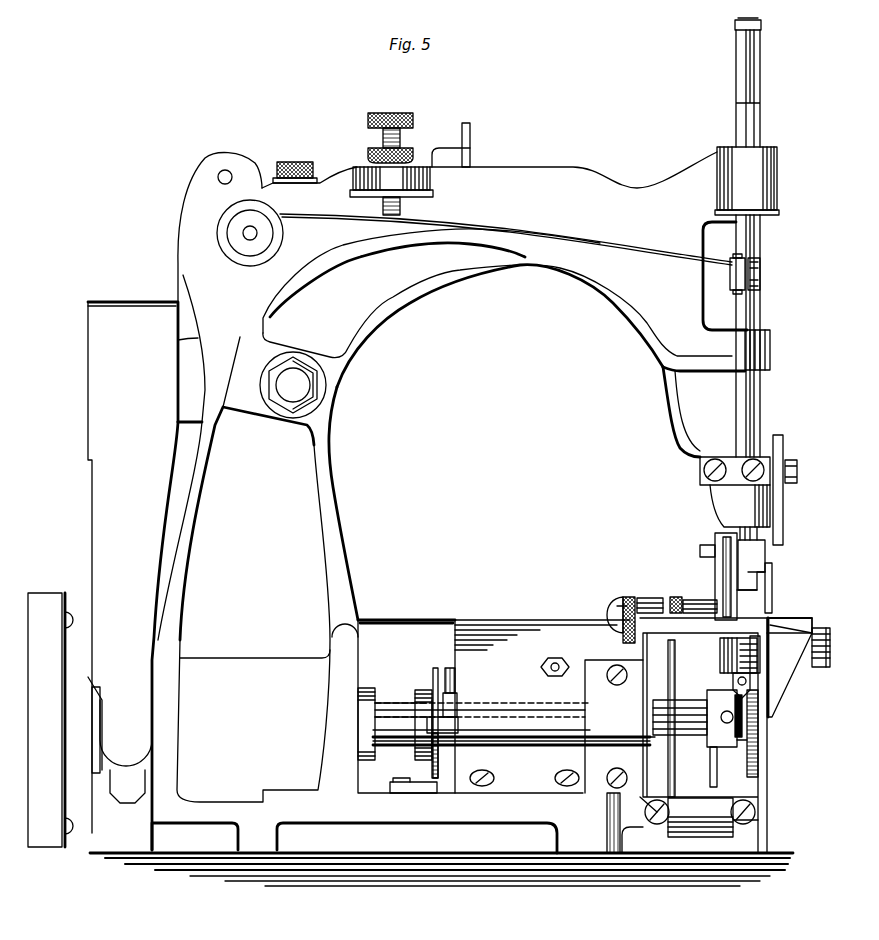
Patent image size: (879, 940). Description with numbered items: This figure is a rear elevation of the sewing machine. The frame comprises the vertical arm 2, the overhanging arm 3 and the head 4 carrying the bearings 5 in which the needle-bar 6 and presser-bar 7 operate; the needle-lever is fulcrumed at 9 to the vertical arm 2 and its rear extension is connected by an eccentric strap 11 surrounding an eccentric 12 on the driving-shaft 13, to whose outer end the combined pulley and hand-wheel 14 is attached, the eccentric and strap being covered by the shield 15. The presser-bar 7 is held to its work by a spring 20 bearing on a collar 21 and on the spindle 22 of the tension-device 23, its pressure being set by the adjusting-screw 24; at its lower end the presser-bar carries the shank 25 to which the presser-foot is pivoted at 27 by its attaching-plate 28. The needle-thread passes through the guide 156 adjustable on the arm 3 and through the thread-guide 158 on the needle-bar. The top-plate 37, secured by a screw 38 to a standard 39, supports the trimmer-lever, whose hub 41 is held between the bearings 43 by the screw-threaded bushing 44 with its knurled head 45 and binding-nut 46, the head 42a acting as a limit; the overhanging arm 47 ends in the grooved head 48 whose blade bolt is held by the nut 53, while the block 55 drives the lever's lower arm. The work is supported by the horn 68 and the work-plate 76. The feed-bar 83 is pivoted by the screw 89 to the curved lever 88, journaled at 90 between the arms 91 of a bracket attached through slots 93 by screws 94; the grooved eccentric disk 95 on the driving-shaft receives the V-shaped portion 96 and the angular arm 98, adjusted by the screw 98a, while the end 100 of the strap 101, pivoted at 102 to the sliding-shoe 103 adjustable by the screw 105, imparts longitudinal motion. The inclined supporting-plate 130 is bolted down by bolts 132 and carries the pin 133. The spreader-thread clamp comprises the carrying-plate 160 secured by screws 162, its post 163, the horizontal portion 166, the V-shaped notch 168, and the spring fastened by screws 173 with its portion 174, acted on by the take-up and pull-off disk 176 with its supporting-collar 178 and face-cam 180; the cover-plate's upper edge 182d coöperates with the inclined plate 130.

The vertical arm 2 is at (350, 590).
The overhanging arm 3 is at (617, 296).
The head 4 is at (685, 422).
The bearings 5 is at (733, 190).
The needle-bar 6 is at (757, 78).
The presser-bar 7 is at (757, 423).
The fulcrum 9 is at (293, 385).
The eccentric strap 11 is at (130, 790).
The eccentric 12 is at (108, 760).
The driving-shaft 13 is at (504, 706).
The combined pulley and hand-wheel 14 is at (43, 605).
The shield 15 is at (133, 567).
The spring 20 is at (638, 242).
The collar 21 is at (763, 274).
The spindle 22 is at (258, 233).
The tension-device 23 is at (248, 259).
The adjusting-screw 24 is at (415, 128).
The shank 25 is at (763, 556).
The pivotal connection 27 is at (771, 537).
The attaching-plate 28 is at (771, 584).
The top-plate 37 is at (705, 743).
The screw 38 is at (630, 650).
The standard 39 is at (661, 718).
The hub 41 is at (700, 610).
The head 42a is at (620, 606).
The bearings 43 is at (647, 597).
The screw-threaded bushing 44 is at (658, 594).
The knurled head 45 is at (675, 597).
The binding-nut 46 is at (613, 610).
The overhanging arm 47 is at (703, 571).
The grooved head 48 is at (718, 535).
The nut 53 is at (706, 546).
The block 55 is at (713, 788).
The horn 68 is at (815, 667).
The work-plate 76 is at (800, 619).
The feed-bar 83 is at (747, 652).
The curved lever 88 is at (727, 776).
The screw 89 is at (759, 643).
The journal 90 is at (620, 837).
The arms 91 is at (676, 812).
The slots 93 is at (743, 798).
The screws 94 is at (607, 810).
The grooved eccentric disk 95 is at (758, 715).
The V-shaped portion 96 is at (790, 680).
The angular arm 98 is at (747, 743).
The screw 98a is at (748, 687).
The strap end 100 is at (658, 743).
The strap 101 is at (658, 762).
The pivotal connection 102 is at (680, 717).
The sliding-shoe 103 is at (742, 728).
The screw 105 is at (727, 712).
The inclined supporting-plate 130 is at (483, 630).
The bolts 132 is at (555, 779).
The pin 133 is at (556, 659).
The guide 156 is at (472, 140).
The thread-guide 158 is at (762, 27).
The carrying-plate 160 is at (422, 794).
The screws 162 is at (398, 786).
The post 163 is at (439, 768).
The horizontal portion 166 is at (430, 724).
The V-shaped notch 168 is at (456, 679).
The screws 173 is at (459, 725).
The spring portion 174 is at (451, 703).
The combined take-up and pull-off disk 176 is at (430, 678).
The supporting-collar 178 is at (415, 698).
The face-cam 180 is at (440, 667).
The upper horizontal edge of cover-plate 182d is at (402, 621).